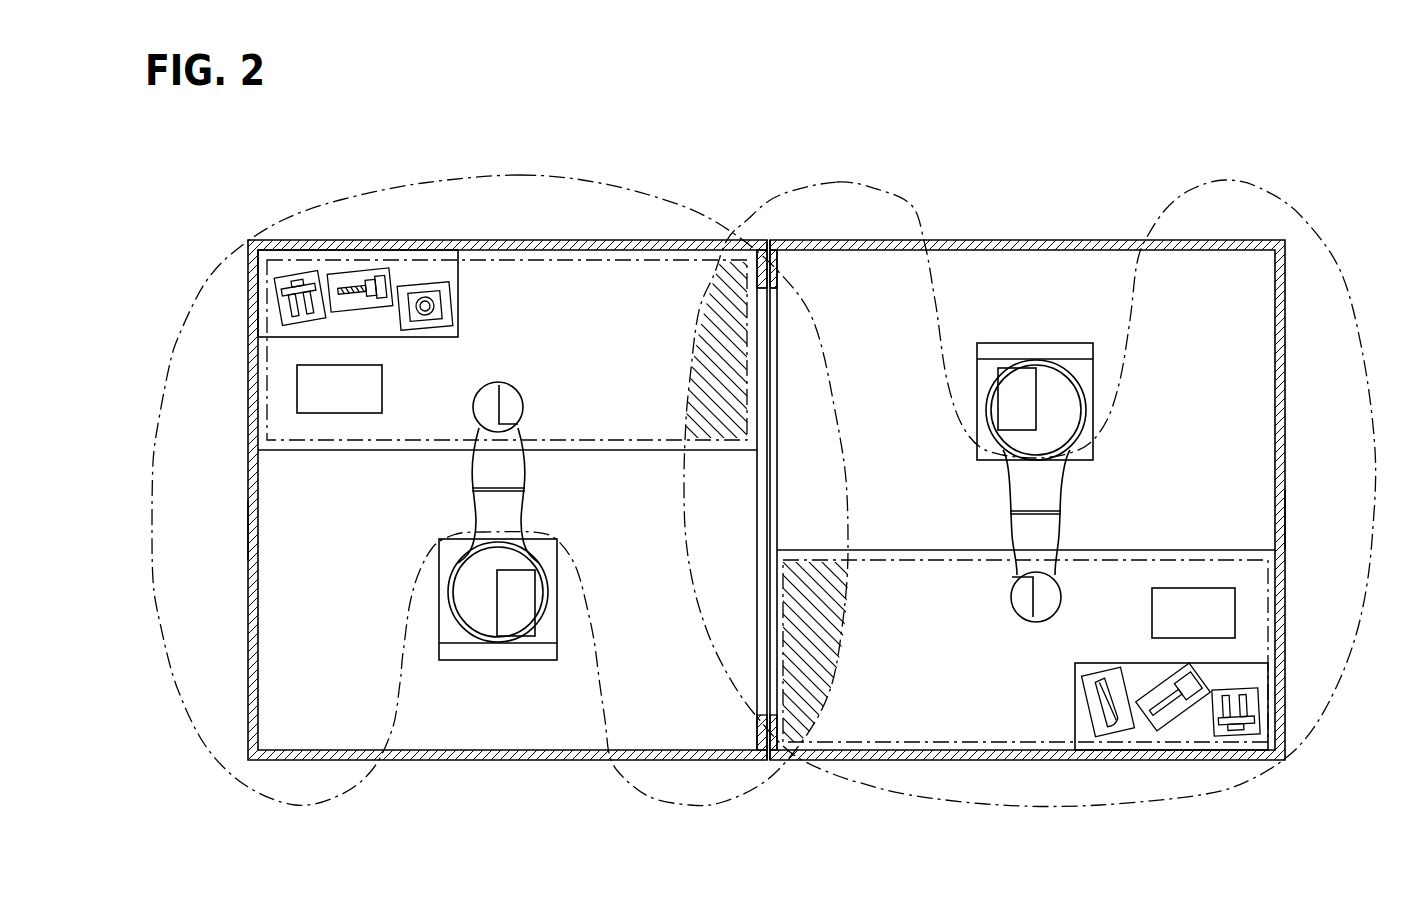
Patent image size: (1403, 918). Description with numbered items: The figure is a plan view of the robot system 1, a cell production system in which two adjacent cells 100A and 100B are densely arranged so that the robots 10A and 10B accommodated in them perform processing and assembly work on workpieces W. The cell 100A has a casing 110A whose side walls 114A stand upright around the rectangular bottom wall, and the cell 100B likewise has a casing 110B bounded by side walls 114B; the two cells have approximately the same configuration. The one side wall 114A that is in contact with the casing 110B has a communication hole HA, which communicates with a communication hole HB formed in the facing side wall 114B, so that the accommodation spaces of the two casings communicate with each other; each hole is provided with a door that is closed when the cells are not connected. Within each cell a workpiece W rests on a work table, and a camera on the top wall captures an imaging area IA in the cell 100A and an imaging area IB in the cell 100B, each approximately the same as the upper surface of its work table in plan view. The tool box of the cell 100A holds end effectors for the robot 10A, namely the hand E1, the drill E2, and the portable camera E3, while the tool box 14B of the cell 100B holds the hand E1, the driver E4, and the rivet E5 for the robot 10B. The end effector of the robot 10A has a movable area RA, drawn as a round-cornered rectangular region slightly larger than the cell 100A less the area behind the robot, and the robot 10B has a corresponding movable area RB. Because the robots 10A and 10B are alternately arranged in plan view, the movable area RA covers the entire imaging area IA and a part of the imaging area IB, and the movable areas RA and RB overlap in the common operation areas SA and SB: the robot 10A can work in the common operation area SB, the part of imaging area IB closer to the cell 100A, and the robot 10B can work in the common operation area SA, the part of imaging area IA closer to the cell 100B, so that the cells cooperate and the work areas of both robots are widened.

The robot system 1 is at (243, 157).
The cell 100A is at (257, 214).
The cell 100B is at (1272, 170).
The casing 110A is at (247, 487).
The casing 110B is at (1286, 457).
The side wall 114A is at (247, 532).
The side wall 114B is at (1287, 516).
The robot 10A is at (553, 400).
The robot 10B is at (1070, 527).
The tool box 14B is at (460, 294).
The workpiece W is at (383, 372).
The hand E1 is at (310, 272).
The drill E2 is at (365, 268).
The portable camera E3 is at (425, 285).
The driver E4 is at (1178, 720).
The rivet E5 is at (1113, 735).
The movable area RA is at (490, 178).
The movable area RB is at (907, 203).
The imaging area IA is at (582, 262).
The imaging area IB is at (885, 747).
The communication hole HA is at (758, 300).
The communication hole HB is at (777, 296).
The common operation area SA is at (712, 437).
The common operation area SB is at (822, 556).